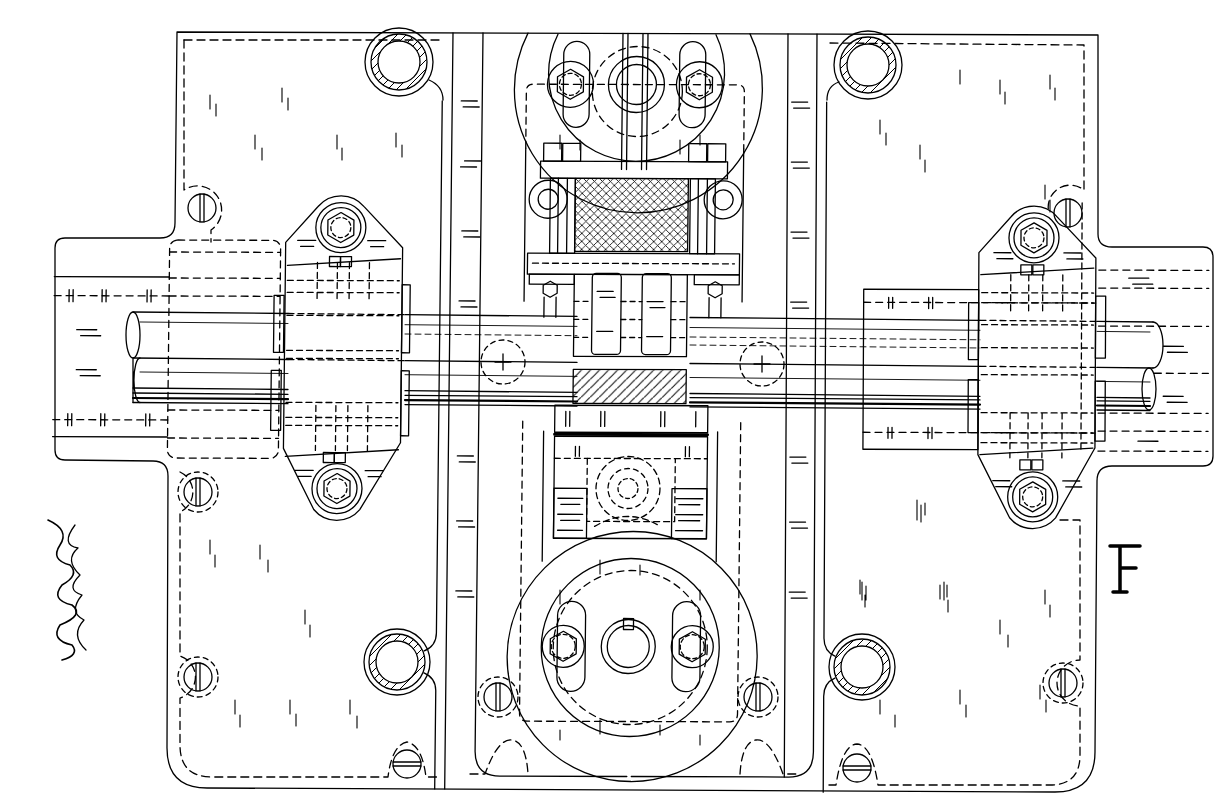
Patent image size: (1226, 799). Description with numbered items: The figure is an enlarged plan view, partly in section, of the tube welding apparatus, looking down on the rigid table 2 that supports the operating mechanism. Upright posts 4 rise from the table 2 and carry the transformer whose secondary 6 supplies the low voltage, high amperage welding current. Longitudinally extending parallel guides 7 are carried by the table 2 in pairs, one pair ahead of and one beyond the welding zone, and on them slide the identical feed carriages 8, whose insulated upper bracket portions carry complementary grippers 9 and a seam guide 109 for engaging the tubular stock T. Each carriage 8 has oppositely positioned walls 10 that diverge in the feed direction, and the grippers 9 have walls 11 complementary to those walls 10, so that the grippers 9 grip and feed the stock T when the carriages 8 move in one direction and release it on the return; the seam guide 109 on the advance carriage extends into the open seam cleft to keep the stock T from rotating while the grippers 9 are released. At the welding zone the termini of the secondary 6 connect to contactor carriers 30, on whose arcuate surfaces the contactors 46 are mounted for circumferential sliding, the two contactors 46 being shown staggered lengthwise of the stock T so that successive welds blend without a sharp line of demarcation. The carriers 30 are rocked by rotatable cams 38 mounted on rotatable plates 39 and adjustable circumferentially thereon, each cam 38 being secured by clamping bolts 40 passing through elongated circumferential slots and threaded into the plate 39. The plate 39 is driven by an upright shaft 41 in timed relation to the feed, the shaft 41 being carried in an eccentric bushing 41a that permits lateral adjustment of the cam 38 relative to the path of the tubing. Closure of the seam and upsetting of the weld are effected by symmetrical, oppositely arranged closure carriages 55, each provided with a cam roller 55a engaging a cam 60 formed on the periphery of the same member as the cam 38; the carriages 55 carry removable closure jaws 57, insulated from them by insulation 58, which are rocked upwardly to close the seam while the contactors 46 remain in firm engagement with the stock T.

The table 2 is at (1096, 654).
The upright posts 4 is at (374, 61).
The secondary 6 is at (622, 166).
The guides 7 is at (97, 292).
The feed carriages 8 is at (258, 249).
The grippers 9 is at (418, 303).
The walls 10 is at (403, 271).
The walls 11 is at (286, 281).
The contactor carriers 30 is at (720, 306).
The cams 38 is at (752, 97).
The rotatable plates 39 is at (648, 100).
The clamping bolts 40 is at (580, 639).
The upright shaft 41 is at (588, 71).
The eccentric bushing 41a is at (657, 68).
The contactors 46 is at (556, 299).
The closure carriages 55 is at (606, 497).
The cam roller 55a is at (658, 495).
The closure jaws 57 is at (632, 401).
The insulation 58 is at (652, 437).
The cam 60 is at (708, 757).
The seam guides 109 is at (288, 360).
The tubular stock T is at (855, 320).